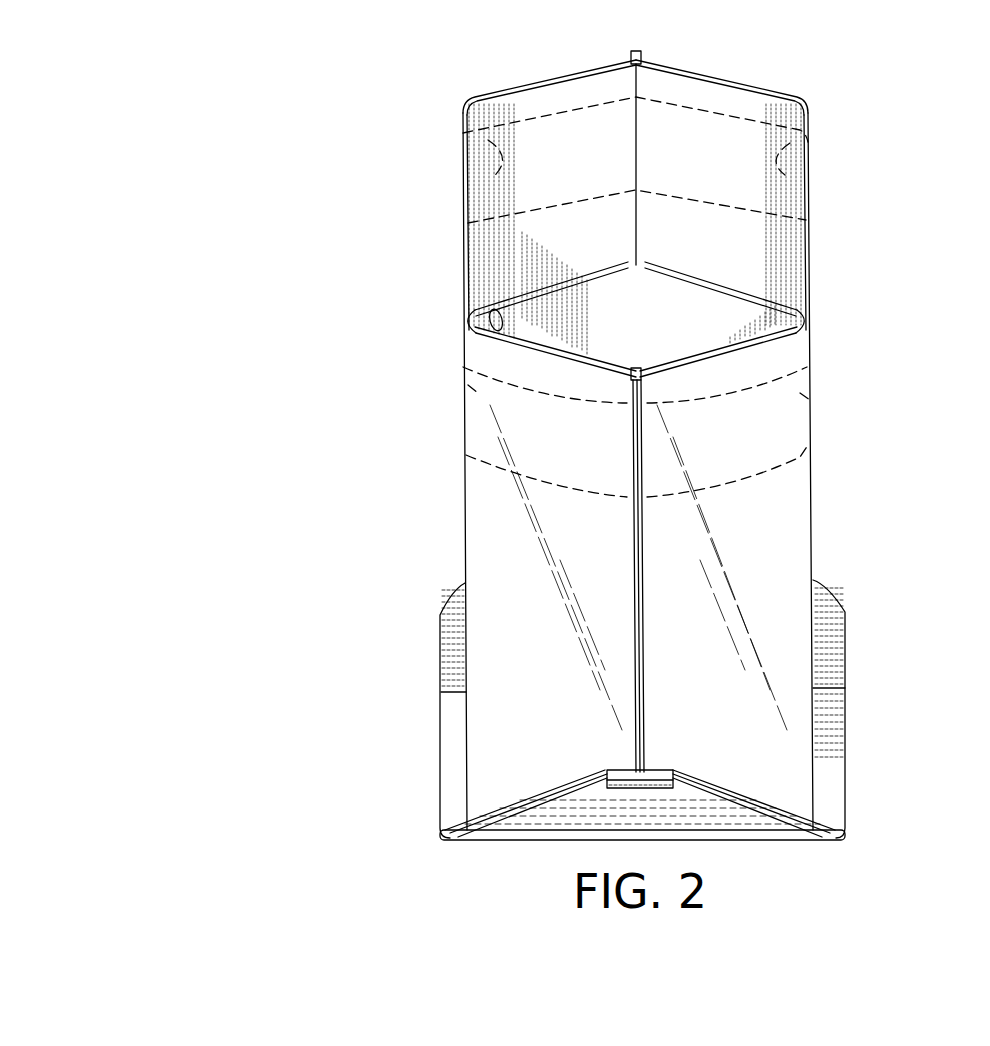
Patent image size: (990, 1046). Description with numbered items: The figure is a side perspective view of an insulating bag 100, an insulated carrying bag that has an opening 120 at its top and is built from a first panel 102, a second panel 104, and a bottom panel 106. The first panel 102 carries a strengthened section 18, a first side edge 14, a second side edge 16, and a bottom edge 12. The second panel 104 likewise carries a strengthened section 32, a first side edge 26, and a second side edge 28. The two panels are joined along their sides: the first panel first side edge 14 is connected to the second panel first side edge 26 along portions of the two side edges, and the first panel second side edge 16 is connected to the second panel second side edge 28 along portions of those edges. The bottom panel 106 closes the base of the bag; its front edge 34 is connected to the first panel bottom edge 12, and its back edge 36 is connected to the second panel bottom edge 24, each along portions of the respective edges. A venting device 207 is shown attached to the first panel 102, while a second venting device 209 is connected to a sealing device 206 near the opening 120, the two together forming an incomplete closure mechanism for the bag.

The insulating bag 100 is at (295, 183).
The first panel 102 is at (484, 530).
The second panel 104 is at (697, 260).
The bottom panel 106 is at (535, 828).
The bottom edge 12 is at (446, 828).
The first side edge 14 is at (632, 432).
The second side edge 16 is at (631, 58).
The strengthened section 18 is at (458, 135).
The bottom edge 24 is at (833, 790).
The first side edge 26 is at (642, 440).
The second side edge 28 is at (641, 62).
The strengthened section 32 is at (808, 143).
The front edge 34 is at (446, 838).
The back edge 36 is at (837, 838).
The opening 120 is at (718, 150).
The sealing device 206 is at (727, 281).
The venting device 207 is at (493, 312).
The venting device 209 is at (630, 262).